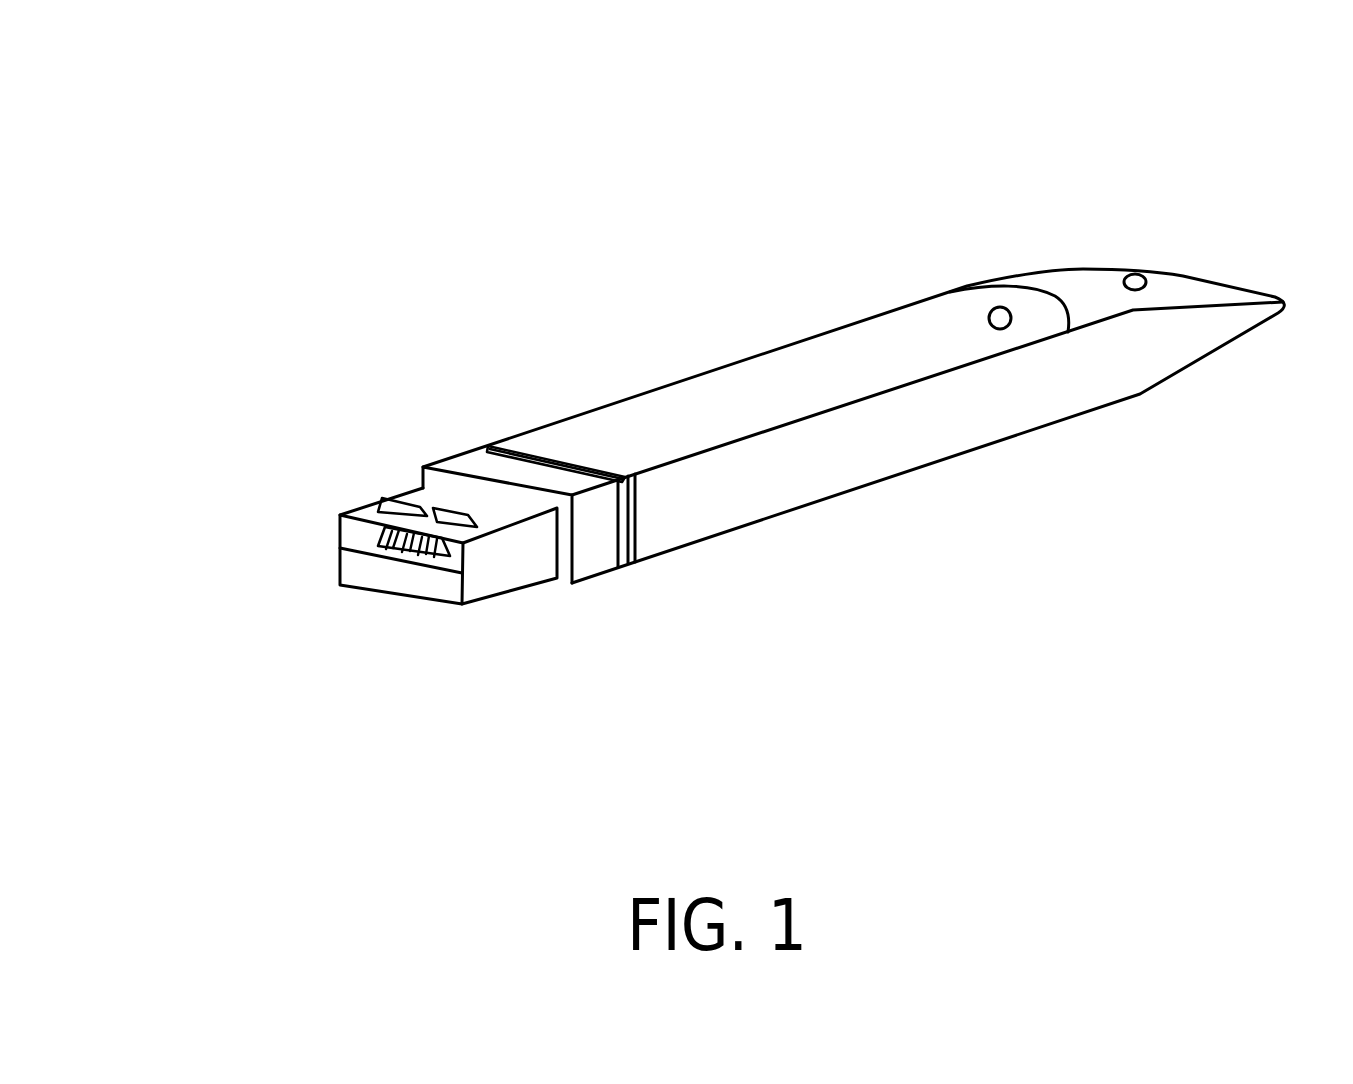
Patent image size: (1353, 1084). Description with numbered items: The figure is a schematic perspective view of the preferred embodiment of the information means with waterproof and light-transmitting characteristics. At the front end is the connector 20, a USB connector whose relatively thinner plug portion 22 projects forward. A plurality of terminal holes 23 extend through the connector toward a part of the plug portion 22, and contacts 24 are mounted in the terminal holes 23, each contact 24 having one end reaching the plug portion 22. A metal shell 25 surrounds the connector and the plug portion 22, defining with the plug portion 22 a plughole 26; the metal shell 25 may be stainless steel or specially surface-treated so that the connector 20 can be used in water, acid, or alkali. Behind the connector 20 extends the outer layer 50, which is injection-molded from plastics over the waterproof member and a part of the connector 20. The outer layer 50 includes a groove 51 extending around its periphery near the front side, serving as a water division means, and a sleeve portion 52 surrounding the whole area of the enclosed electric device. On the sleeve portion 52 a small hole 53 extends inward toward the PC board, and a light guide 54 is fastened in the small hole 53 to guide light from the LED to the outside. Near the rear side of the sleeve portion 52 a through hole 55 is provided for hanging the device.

The connector 20 is at (542, 578).
The plug portion 22 is at (350, 570).
The terminal holes 23 is at (413, 550).
The contacts 24 is at (428, 556).
The metal shell 25 is at (393, 508).
The plughole 26 is at (395, 540).
The outer layer 50 is at (668, 385).
The groove 51 is at (490, 447).
The sleeve portion 52 is at (820, 365).
The small hole 53 is at (1005, 333).
The light guide 54 is at (990, 312).
The through hole 55 is at (1128, 273).